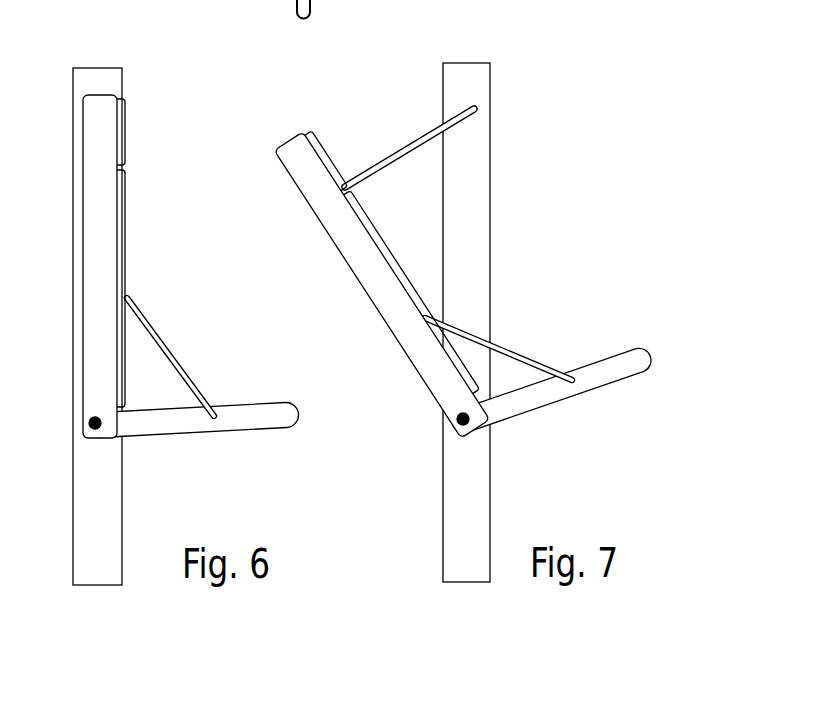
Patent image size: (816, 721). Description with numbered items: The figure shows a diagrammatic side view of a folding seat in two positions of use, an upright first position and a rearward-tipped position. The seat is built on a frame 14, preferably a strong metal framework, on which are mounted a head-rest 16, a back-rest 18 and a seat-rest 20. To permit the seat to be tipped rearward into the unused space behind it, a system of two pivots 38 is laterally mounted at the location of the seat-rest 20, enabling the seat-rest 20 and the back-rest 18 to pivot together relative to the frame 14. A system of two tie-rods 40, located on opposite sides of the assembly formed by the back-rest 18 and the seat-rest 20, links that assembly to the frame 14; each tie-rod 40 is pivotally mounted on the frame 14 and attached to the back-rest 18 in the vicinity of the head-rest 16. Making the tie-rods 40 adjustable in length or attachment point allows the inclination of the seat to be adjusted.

In FIG. 6, the frame 14 is at (112, 80).
In FIG. 7, the frame 14 is at (482, 182).
In FIG. 6, the head-rest 16 is at (120, 133).
In FIG. 7, the head-rest 16 is at (320, 140).
In FIG. 6, the back-rest 18 is at (122, 245).
In FIG. 7, the back-rest 18 is at (371, 230).
In FIG. 6, the seat-rest 20 is at (282, 411).
In FIG. 7, the seat-rest 20 is at (633, 360).
In FIG. 6, the pivot 38 is at (90, 423).
In FIG. 7, the pivot 38 is at (468, 427).
In FIG. 7, the tie-rod 40 is at (403, 152).